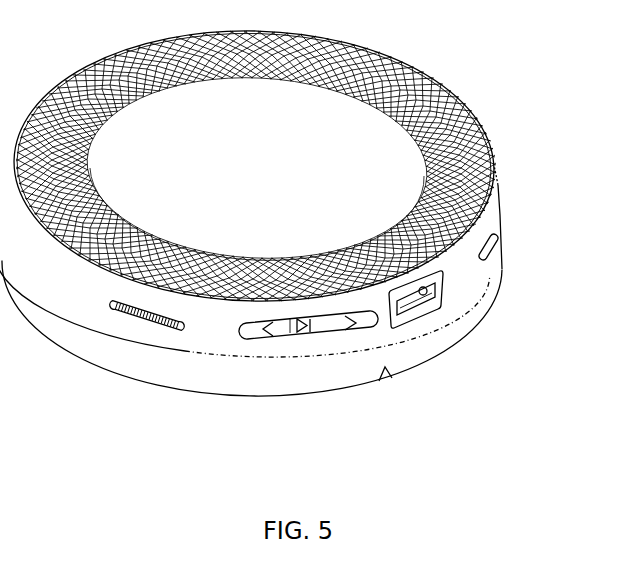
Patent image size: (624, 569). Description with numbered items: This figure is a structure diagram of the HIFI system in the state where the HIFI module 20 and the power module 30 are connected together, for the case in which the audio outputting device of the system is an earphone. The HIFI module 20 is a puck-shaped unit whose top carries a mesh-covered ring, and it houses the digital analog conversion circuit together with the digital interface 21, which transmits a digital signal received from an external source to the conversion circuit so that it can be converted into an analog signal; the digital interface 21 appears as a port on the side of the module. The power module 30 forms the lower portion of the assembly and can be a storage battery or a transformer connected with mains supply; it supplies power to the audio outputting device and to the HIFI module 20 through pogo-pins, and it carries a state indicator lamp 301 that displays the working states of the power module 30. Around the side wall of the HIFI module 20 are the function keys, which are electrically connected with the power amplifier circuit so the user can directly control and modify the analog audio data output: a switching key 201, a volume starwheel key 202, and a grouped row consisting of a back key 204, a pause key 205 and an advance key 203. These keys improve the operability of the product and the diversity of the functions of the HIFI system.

The HIFI module 20 is at (487, 167).
The switching key 201 is at (489, 245).
The digital interface 21 is at (428, 296).
The power module 30 is at (427, 346).
The state indicator lamp 301 is at (387, 374).
The volume starwheel key 202 is at (160, 323).
The back key 204 is at (262, 333).
The pause key 205 is at (308, 334).
The advance key 203 is at (351, 331).